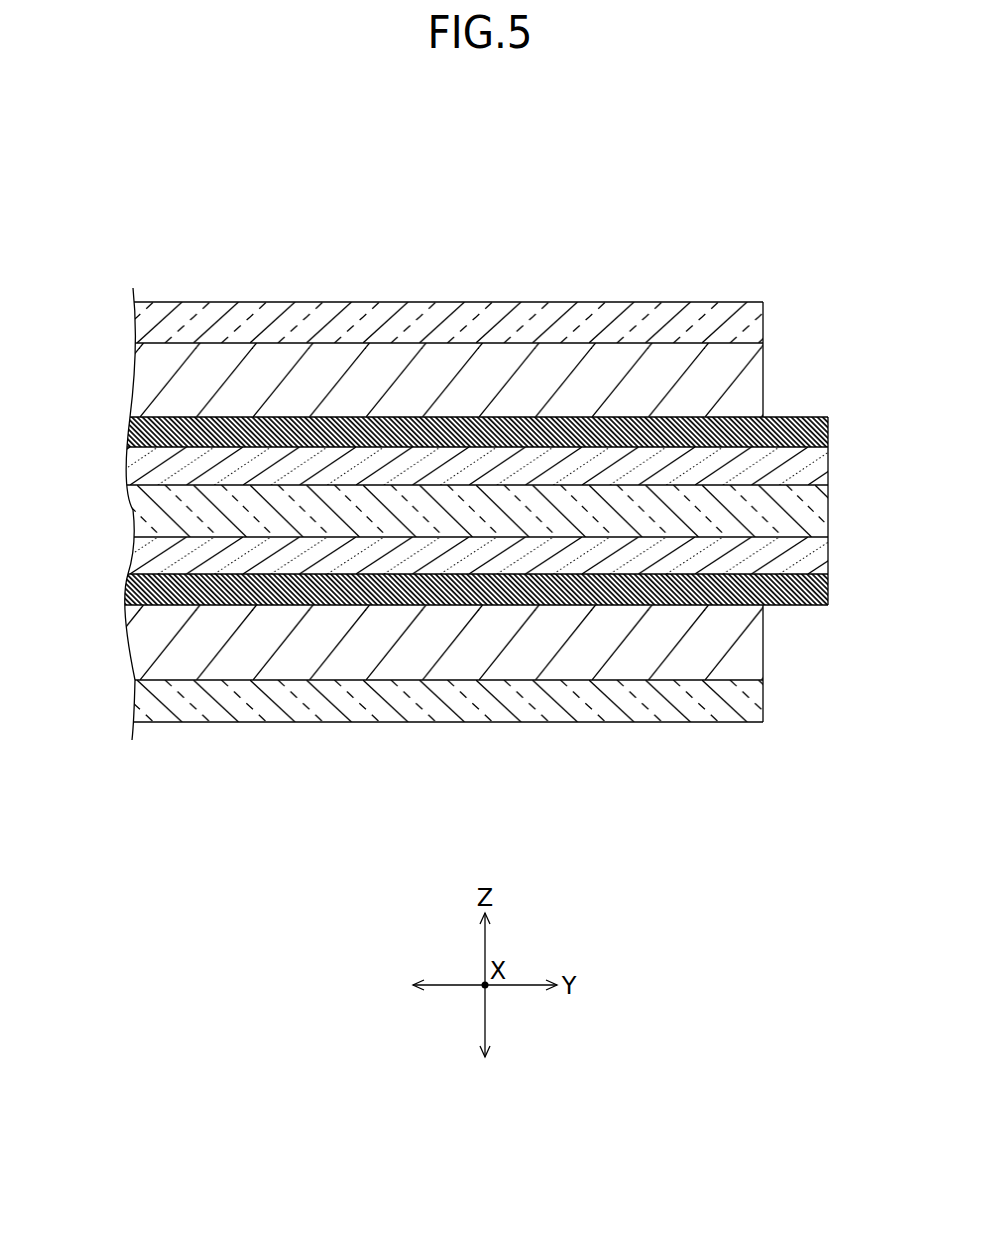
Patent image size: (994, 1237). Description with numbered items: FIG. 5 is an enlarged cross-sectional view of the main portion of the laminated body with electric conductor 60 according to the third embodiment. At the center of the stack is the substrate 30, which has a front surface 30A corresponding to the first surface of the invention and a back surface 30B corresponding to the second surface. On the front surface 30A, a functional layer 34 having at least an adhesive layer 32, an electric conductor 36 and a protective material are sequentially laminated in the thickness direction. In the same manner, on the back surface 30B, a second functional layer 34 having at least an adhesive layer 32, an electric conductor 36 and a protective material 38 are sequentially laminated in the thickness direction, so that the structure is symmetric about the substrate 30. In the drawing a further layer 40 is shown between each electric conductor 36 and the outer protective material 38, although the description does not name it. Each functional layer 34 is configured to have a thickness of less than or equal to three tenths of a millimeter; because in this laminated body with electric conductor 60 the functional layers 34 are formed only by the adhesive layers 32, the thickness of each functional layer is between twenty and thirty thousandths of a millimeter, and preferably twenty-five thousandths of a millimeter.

The laminated body with electric conductor 60 is at (620, 262).
The protective material 38 is at (758, 323).
The resin layer 40 is at (758, 363).
The electric conductor 36 is at (828, 432).
The adhesive layer 32 is at (828, 465).
The functional layer 34 is at (121, 463).
The substrate 30 is at (828, 512).
The front surface 30A is at (457, 487).
The back surface 30B is at (440, 537).